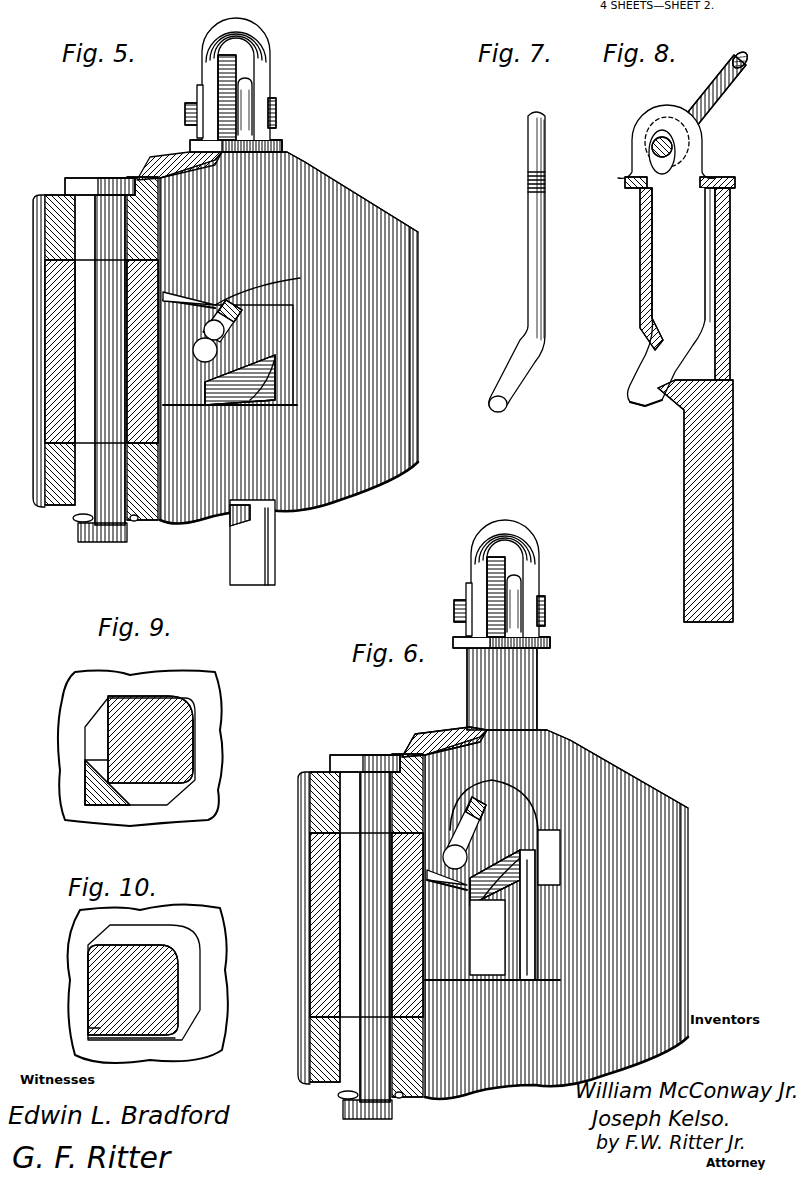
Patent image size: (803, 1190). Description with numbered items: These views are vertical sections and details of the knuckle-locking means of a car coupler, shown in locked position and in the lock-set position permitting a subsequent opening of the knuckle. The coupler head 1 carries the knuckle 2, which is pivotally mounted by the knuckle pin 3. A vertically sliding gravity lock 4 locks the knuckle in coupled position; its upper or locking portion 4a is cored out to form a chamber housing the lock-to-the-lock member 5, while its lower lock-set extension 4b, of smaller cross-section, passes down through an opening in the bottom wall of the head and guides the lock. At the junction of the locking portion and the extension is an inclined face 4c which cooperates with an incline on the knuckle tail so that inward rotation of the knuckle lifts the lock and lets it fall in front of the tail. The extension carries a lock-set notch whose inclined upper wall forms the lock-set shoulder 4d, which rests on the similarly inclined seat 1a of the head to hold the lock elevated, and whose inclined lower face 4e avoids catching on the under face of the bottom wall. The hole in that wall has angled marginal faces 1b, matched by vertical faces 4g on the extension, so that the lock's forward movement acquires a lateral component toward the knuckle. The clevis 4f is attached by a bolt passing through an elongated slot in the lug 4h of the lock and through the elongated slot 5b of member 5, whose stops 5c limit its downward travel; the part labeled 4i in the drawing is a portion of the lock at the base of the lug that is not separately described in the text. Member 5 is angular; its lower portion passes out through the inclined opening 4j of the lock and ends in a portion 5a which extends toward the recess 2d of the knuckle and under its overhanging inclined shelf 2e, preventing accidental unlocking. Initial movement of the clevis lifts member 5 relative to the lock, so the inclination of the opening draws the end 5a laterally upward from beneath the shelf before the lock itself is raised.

In FIG. 5, the coupler head 1 is at (380, 213).
In FIG. 9, the coupler head 1 is at (64, 718).
In FIG. 10, the coupler head 1 is at (88, 940).
In FIG. 6, the coupler head 1 is at (663, 882).
In FIG. 5, the lock-set seat 1a is at (240, 408).
In FIG. 9, the lock-set seat 1a is at (100, 785).
In FIG. 6, the lock-set seat 1a is at (500, 982).
In FIG. 9, the marginal faces 1b is at (100, 710).
In FIG. 10, the marginal faces 1b is at (110, 928).
In FIG. 5, the knuckle 2 is at (38, 355).
In FIG. 6, the knuckle 2 is at (308, 920).
In FIG. 5, the recess 2d is at (195, 365).
In FIG. 6, the recess 2d is at (467, 930).
In FIG. 5, the overhanging inclined shelf 2e is at (262, 283).
In FIG. 6, the overhanging inclined shelf 2e is at (477, 910).
In FIG. 5, the knuckle pin 3 is at (85, 182).
In FIG. 6, the knuckle pin 3 is at (350, 760).
In FIG. 9, the gravity lock 4 is at (170, 725).
In FIG. 10, the gravity lock 4 is at (176, 952).
In FIG. 5, the upper portion of lock 4a is at (265, 328).
In FIG. 8, the upper portion of lock 4a is at (732, 332).
In FIG. 6, the upper portion of lock 4a is at (537, 683).
In FIG. 5, the lock-set extension 4b is at (262, 575).
In FIG. 8, the lock-set extension 4b is at (722, 532).
In FIG. 9, the lock-set extension 4b is at (194, 755).
In FIG. 10, the lock-set extension 4b is at (90, 975).
In FIG. 6, the lock-set extension 4b is at (522, 945).
In FIG. 5, the inclined face 4c is at (280, 382).
In FIG. 6, the inclined face 4c is at (472, 862).
In FIG. 9, the lock-set shoulder 4d is at (100, 758).
In FIG. 10, the lock-set shoulder 4d is at (90, 1028).
In FIG. 6, the lock-set shoulder 4d is at (488, 978).
In FIG. 5, the lower face of lock-set notch 4e is at (232, 528).
In FIG. 5, the clevis 4f is at (264, 50).
In FIG. 8, the clevis 4f is at (700, 92).
In FIG. 6, the clevis 4f is at (533, 552).
In FIG. 5, the vertical faces 4g is at (272, 578).
In FIG. 9, the vertical faces 4g is at (108, 698).
In FIG. 10, the vertical faces 4g is at (90, 950).
In FIG. 6, the vertical faces 4g is at (530, 968).
In FIG. 5, the lug 4h is at (222, 66).
In FIG. 8, the lug 4h is at (637, 113).
In FIG. 6, the lug 4h is at (488, 572).
In FIG. 5, the base plate of shackle 4i is at (193, 141).
In FIG. 8, the base plate of shackle 4i is at (745, 172).
In FIG. 6, the base plate of shackle 4i is at (468, 702).
In FIG. 8, the inclined opening 4j is at (655, 343).
In FIG. 6, the inclined opening 4j is at (405, 748).
In FIG. 5, the lock-to-the-lock member 5 is at (246, 100).
In FIG. 7, the lock-to-the-lock member 5 is at (528, 236).
In FIG. 8, the lock-to-the-lock member 5 is at (665, 240).
In FIG. 6, the lock-to-the-lock member 5 is at (514, 594).
In FIG. 5, the lower end of member 5 5a is at (215, 350).
In FIG. 7, the lower end of member 5 5a is at (497, 413).
In FIG. 8, the lower end of member 5 5a is at (633, 406).
In FIG. 6, the lower end of member 5 5a is at (458, 847).
In FIG. 8, the elongated slot 5b is at (652, 150).
In FIG. 5, the stops 5c is at (270, 130).
In FIG. 7, the stops 5c is at (528, 174).
In FIG. 8, the stops 5c is at (630, 168).
In FIG. 6, the stops 5c is at (540, 640).